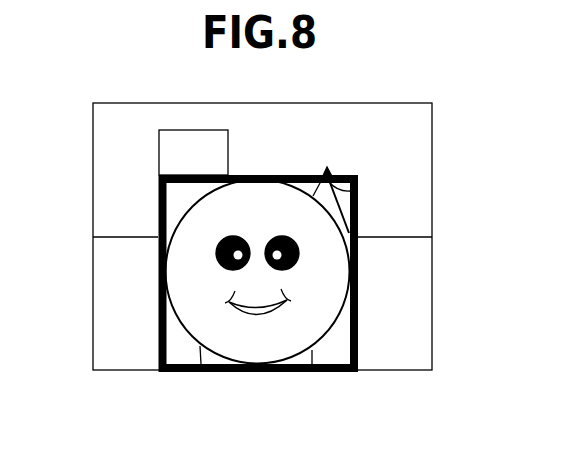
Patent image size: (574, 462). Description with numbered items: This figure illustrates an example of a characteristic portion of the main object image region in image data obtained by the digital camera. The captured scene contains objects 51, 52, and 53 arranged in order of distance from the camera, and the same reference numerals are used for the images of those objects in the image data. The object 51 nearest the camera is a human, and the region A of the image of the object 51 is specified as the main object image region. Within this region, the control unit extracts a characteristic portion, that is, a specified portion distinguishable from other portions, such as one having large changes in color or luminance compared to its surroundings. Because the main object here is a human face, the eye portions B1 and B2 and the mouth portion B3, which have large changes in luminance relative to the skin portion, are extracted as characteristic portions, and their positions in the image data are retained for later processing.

The region A is at (360, 197).
The object 51 is at (343, 327).
The object 52 is at (350, 174).
The object 53 is at (192, 129).
The eye portion B1 is at (230, 243).
The eye portion B2 is at (297, 248).
The mouth portion B3 is at (261, 322).